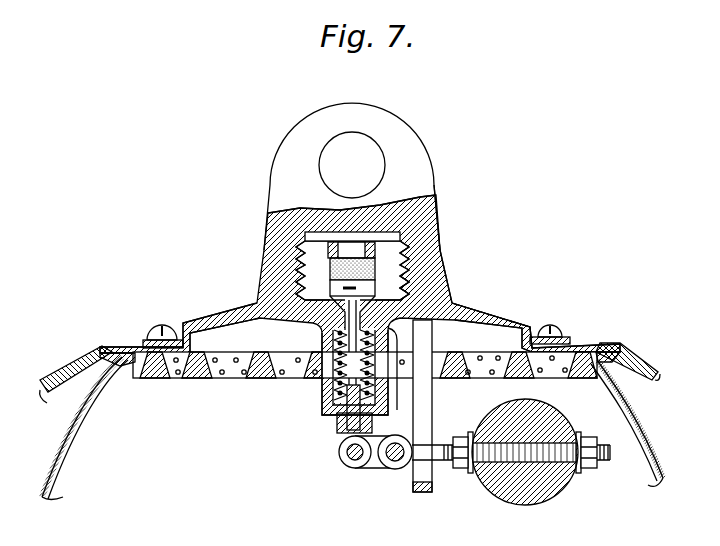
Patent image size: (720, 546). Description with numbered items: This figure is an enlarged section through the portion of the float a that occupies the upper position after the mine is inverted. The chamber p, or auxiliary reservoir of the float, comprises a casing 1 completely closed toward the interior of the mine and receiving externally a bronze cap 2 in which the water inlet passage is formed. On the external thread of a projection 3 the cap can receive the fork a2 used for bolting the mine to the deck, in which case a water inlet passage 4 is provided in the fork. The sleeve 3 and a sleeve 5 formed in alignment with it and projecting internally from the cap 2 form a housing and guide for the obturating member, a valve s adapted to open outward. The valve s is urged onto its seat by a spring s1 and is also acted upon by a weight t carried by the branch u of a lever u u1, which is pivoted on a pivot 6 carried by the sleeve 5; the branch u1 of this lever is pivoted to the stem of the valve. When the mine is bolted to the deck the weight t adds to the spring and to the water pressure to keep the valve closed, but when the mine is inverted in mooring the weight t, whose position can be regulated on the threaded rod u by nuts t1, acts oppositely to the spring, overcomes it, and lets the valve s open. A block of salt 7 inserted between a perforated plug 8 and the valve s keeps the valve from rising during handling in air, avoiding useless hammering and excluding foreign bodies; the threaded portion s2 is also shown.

The casing 1 is at (75, 433).
The bronze cap 2 is at (498, 316).
The projection / sleeve 3 is at (412, 274).
The water inlet passage 4 is at (422, 219).
The sleeve 5 is at (325, 417).
The pivot 6 is at (397, 460).
The block of salt 7 is at (300, 270).
The perforated plug 8 is at (300, 244).
The float a is at (63, 372).
The fork a2 is at (440, 247).
The chamber or auxiliary reservoir p is at (140, 408).
The valve s is at (300, 290).
The spring s1 is at (323, 393).
The threaded portion s2 is at (408, 292).
The weight t is at (540, 492).
The nuts t1 is at (460, 450).
The lever branch / threaded rod u is at (485, 490).
The lever branch u1 is at (373, 455).